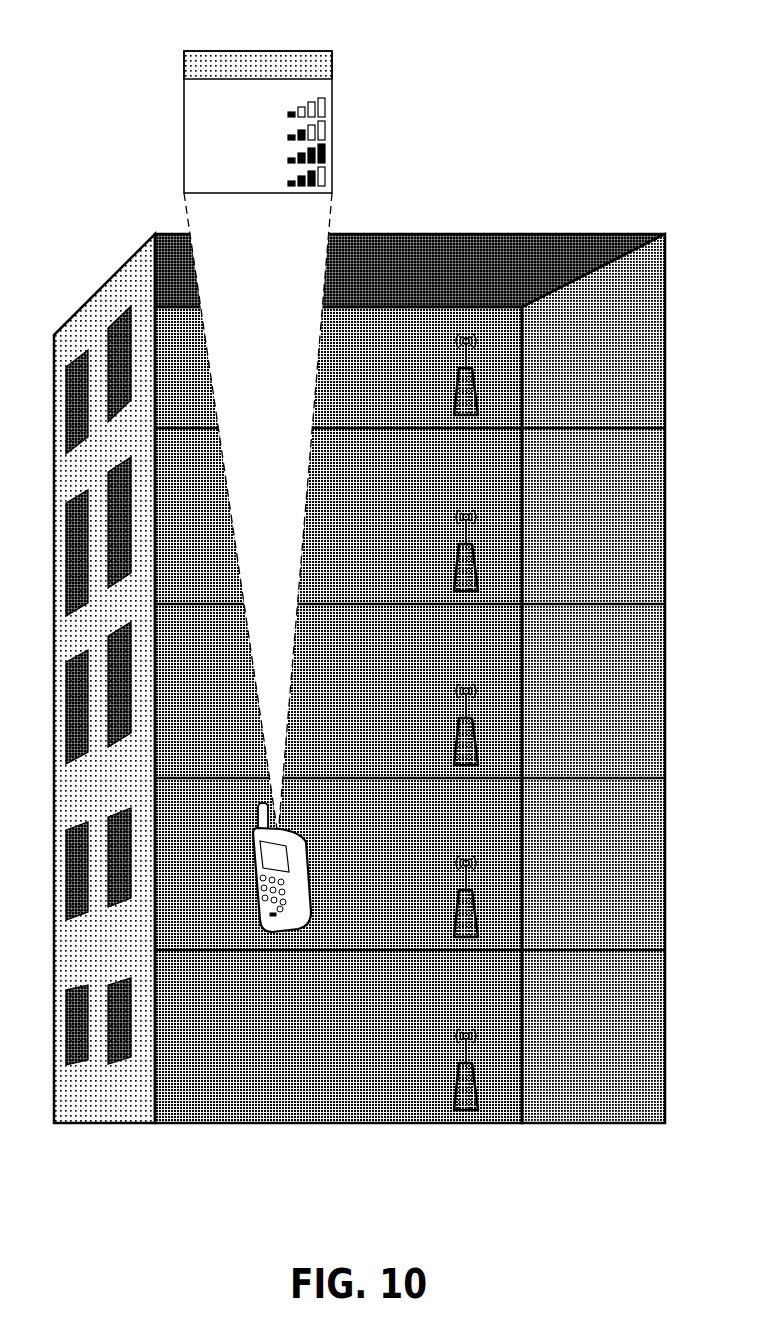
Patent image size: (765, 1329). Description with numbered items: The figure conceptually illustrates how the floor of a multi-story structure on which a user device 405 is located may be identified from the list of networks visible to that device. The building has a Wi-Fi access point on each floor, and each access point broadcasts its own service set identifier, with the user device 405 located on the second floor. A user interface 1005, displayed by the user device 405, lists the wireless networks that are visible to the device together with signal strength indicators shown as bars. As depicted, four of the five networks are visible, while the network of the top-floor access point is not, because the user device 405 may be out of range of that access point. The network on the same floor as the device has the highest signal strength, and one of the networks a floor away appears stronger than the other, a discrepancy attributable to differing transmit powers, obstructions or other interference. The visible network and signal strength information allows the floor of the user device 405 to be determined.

The user interface 1005 is at (297, 50).
The user device 405 is at (307, 840).